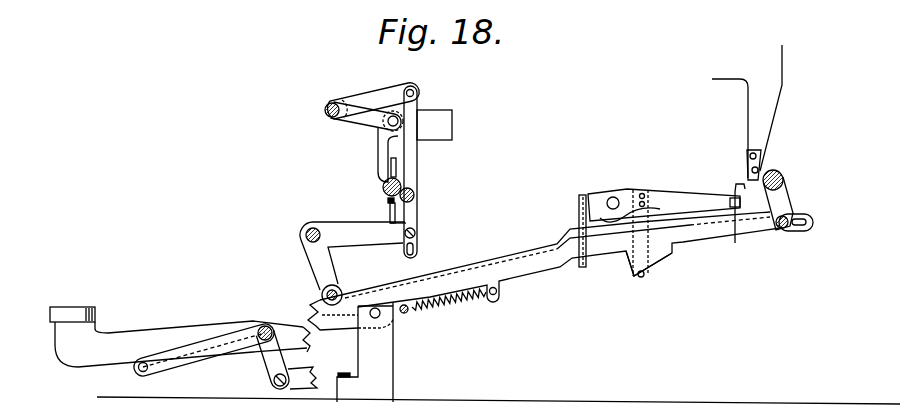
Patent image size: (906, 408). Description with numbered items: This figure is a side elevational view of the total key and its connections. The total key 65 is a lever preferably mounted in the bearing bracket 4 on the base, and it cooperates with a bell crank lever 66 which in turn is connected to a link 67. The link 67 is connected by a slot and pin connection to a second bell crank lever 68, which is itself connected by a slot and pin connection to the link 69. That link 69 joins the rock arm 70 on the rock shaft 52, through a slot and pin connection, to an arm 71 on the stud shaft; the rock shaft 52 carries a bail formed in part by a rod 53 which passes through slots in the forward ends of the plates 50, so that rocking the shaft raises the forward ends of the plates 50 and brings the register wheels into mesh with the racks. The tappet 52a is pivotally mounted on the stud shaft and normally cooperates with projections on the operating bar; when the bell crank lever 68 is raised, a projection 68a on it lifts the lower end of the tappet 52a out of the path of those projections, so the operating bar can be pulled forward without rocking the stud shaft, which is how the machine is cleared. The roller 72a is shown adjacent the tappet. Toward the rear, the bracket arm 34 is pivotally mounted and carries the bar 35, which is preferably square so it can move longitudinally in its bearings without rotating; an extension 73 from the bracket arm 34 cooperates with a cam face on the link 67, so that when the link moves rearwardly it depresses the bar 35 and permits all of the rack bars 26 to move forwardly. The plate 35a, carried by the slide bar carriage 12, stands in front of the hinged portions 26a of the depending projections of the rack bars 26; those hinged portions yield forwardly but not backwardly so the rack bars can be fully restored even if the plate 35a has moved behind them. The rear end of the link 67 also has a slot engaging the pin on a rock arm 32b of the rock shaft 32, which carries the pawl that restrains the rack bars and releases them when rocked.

The bearing bracket 4 is at (365, 352).
The slide bar carriage 12 is at (580, 219).
The rack bar 26 is at (747, 111).
The hinged portion 26a is at (749, 163).
The rock shaft 32 is at (780, 172).
The rock arm 32b is at (778, 203).
The bracket arm 34 is at (662, 198).
The bar 35 is at (727, 229).
The plate 35a is at (735, 189).
The plate 50 is at (440, 118).
The rock shaft 52 is at (325, 116).
The tappet 52a is at (387, 162).
The rod 53 is at (398, 119).
The total key 65 is at (180, 337).
The bell crank lever 66 is at (203, 354).
The link 67 is at (546, 266).
The bell crank lever 68 is at (312, 256).
The projection 68a is at (390, 213).
The link 69 is at (415, 158).
The rock arm 70 is at (365, 97).
The arm 71 is at (415, 194).
The roller 72a is at (382, 187).
The extension 73 is at (644, 277).